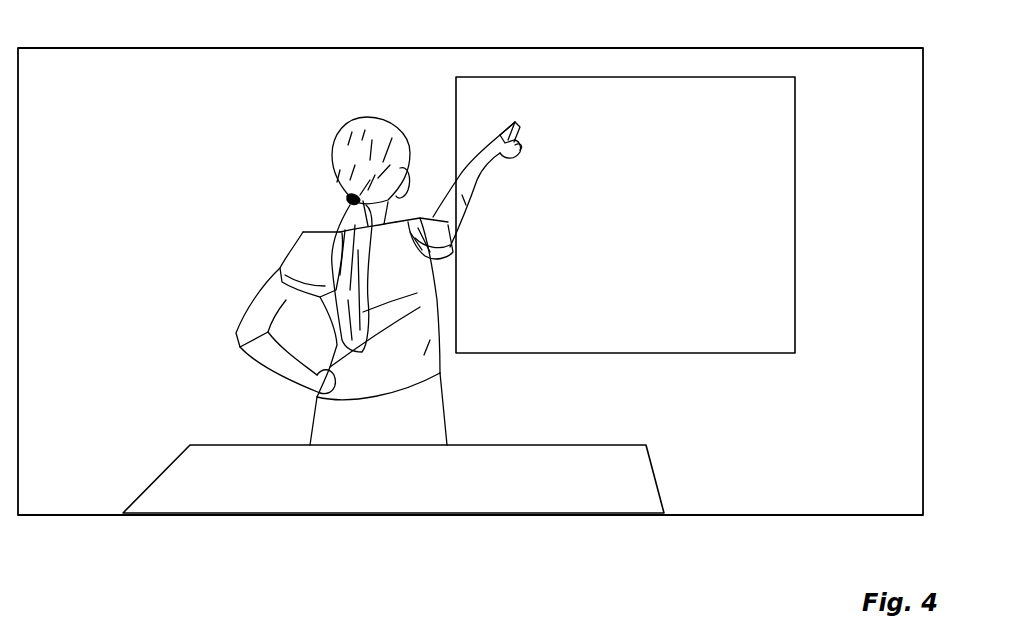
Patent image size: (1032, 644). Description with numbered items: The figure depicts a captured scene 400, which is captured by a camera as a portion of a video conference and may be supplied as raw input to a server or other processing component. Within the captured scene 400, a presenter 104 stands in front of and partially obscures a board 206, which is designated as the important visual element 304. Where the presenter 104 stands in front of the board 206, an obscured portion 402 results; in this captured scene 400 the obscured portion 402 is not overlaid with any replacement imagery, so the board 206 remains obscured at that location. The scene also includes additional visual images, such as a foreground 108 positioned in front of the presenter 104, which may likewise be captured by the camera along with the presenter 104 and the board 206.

The captured scene 400 is at (877, 48).
The obscured portion 402 is at (442, 133).
The presenter 104 is at (305, 243).
The board 206 is at (645, 294).
The important visual element 304 is at (680, 353).
The foreground 108 is at (235, 475).